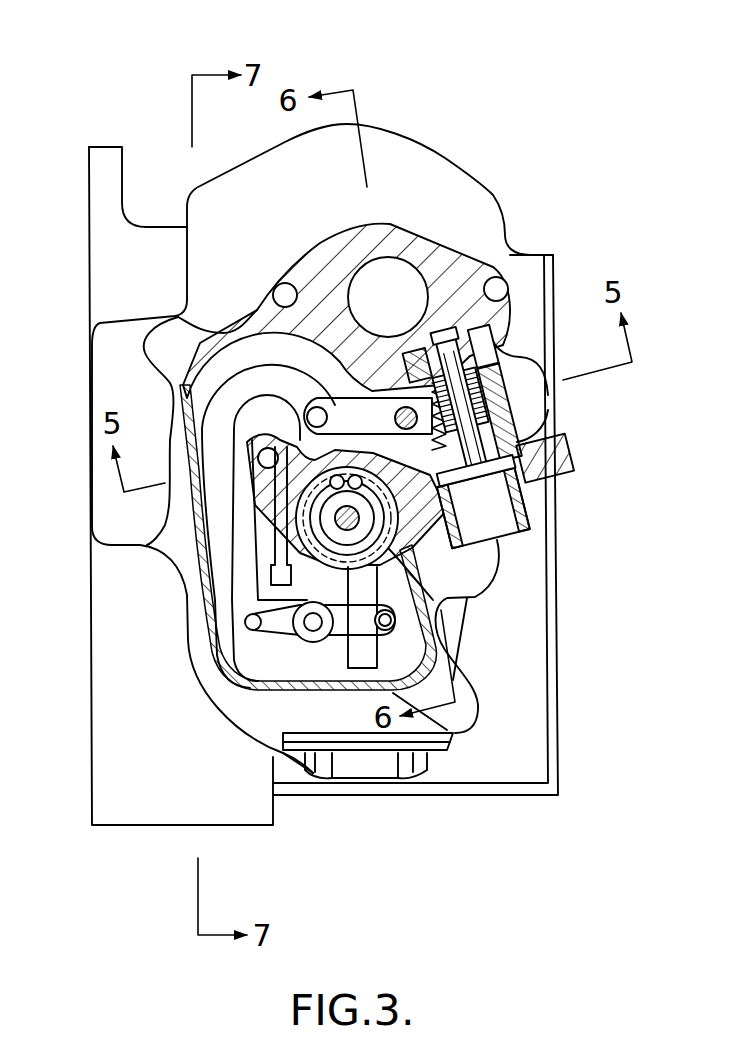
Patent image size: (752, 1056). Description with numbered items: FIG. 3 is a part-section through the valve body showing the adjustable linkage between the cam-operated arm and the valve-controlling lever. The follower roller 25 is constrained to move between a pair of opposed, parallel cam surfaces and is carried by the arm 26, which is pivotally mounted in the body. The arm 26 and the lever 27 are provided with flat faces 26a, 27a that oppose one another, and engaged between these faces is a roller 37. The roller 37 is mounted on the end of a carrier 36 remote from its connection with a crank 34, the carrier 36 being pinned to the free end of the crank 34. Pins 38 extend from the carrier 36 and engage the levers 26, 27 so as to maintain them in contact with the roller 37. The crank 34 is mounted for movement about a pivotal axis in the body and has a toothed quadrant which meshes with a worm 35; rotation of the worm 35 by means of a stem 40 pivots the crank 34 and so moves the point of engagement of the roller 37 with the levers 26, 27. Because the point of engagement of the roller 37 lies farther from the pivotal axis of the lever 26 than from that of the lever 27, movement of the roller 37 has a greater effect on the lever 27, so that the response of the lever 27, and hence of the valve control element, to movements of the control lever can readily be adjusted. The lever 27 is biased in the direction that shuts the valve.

The follower roller 25 is at (443, 512).
The arm 26 is at (277, 552).
The flat face 26a is at (295, 663).
The lever 27 is at (363, 652).
The flat face 27a is at (342, 660).
The crank 34 is at (375, 415).
The worm 35 is at (445, 400).
The carrier 36 is at (222, 397).
The roller 37 is at (253, 620).
The pins 38 is at (233, 633).
The stem 40 is at (507, 540).